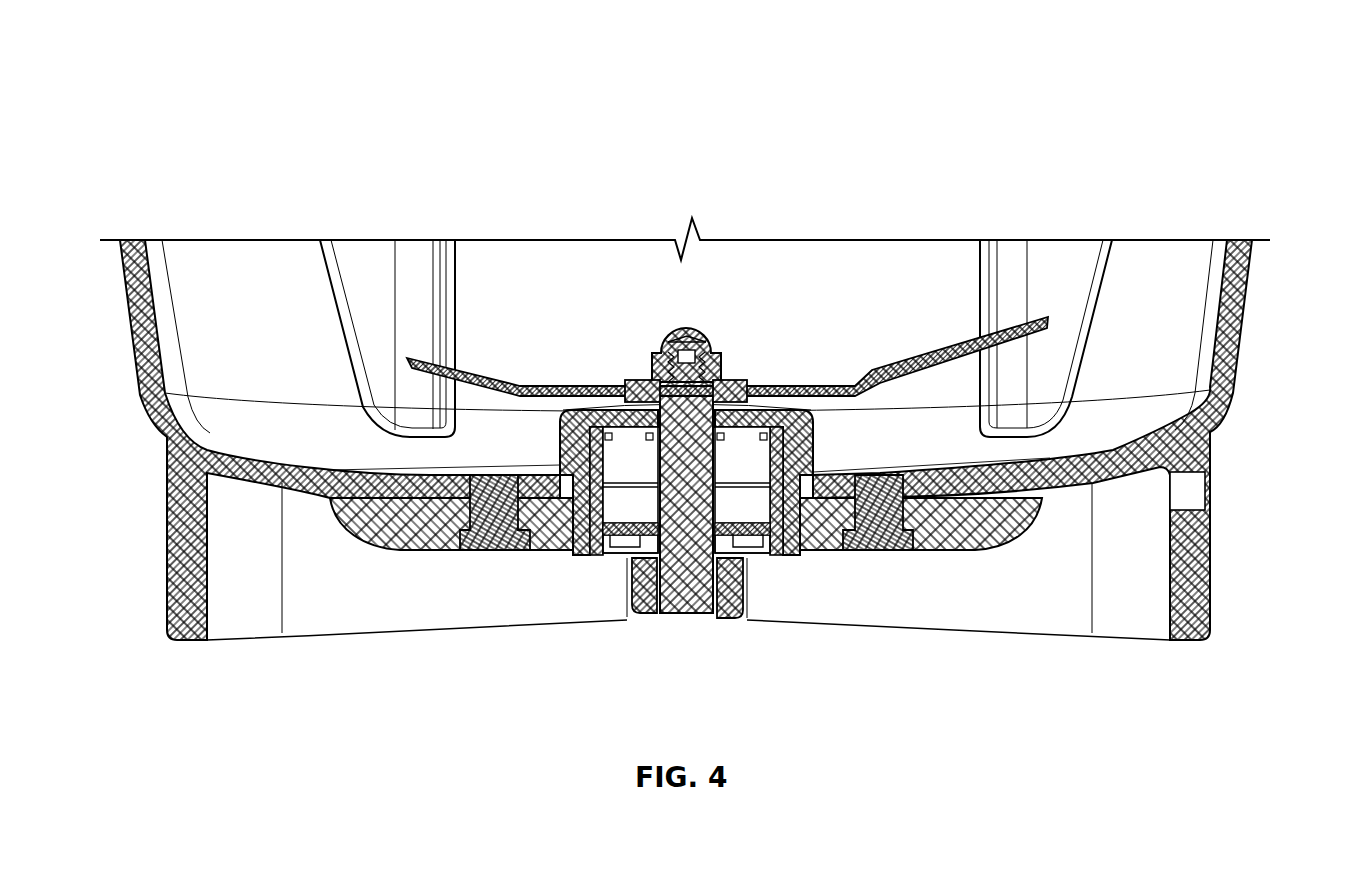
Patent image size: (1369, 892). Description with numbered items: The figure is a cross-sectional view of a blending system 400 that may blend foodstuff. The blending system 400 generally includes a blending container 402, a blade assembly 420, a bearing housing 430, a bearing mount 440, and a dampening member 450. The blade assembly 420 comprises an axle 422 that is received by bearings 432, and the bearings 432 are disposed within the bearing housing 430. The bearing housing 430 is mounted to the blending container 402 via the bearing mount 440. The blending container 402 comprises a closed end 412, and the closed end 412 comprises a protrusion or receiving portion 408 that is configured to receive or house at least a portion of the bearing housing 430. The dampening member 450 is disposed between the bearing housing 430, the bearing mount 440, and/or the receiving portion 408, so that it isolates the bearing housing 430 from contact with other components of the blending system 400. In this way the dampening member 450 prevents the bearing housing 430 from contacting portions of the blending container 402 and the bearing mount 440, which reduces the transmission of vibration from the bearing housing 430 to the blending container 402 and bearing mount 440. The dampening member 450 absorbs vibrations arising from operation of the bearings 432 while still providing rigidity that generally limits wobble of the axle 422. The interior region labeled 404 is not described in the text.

The blending system 400 is at (170, 118).
The blending container 402 is at (1230, 303).
The container ribs 404 is at (1057, 255).
The receiving portion 408 is at (792, 427).
The closed end 412 is at (1172, 484).
The blade assembly 420 is at (655, 318).
The axle 422 is at (722, 368).
The bearing housing 430 is at (597, 522).
The bearings 432 is at (628, 470).
The bearing mount 440 is at (332, 508).
The dampening member 450 is at (792, 538).